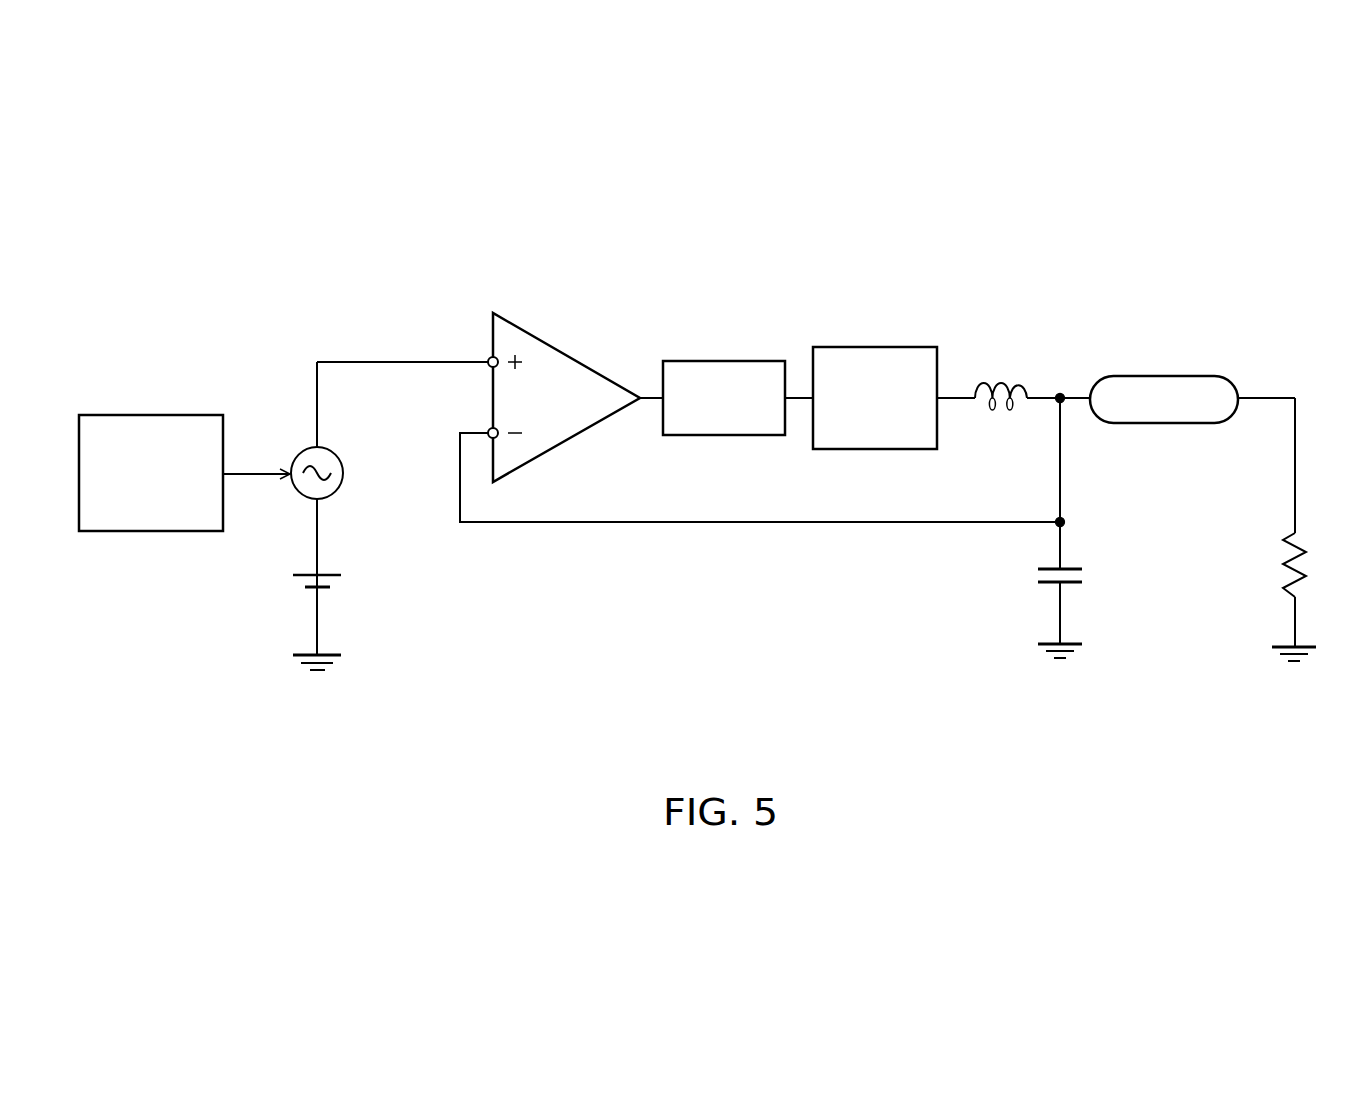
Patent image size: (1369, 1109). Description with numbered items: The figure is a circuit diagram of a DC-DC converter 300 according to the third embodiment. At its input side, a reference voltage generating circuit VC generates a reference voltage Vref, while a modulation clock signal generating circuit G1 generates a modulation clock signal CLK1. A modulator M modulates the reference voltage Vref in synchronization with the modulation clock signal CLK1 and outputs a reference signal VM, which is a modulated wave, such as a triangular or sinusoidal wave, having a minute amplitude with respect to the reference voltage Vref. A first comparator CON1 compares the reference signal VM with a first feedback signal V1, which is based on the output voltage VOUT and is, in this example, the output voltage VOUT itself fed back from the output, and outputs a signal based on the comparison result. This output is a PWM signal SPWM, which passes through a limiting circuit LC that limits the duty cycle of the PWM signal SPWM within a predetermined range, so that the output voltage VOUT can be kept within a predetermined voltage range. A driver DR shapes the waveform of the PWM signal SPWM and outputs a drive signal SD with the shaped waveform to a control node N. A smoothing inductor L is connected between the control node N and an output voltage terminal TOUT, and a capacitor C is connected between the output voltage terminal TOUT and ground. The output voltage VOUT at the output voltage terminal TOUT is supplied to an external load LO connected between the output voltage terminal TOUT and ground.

The DC-DC converter 300 is at (752, 723).
The modulation clock signal generating circuit G1 is at (152, 412).
The modulation clock signal CLK1 is at (256, 463).
The modulator M is at (343, 474).
The reference voltage generating circuit VC is at (345, 573).
The reference voltage Vref is at (272, 585).
The first comparator CON1 is at (567, 352).
The reference signal VM is at (475, 351).
The first feedback signal V1 is at (756, 464).
The limiting circuit LC is at (724, 360).
The PWM signal SPWM is at (800, 397).
The driver DR is at (875, 347).
The control node N is at (955, 395).
The drive signal SD is at (956, 413).
The smoothing inductor L is at (1003, 382).
The output voltage terminal TOUT is at (1165, 376).
The output voltage VOUT is at (1272, 387).
The external load LO is at (1298, 540).
The capacitor C is at (1068, 566).